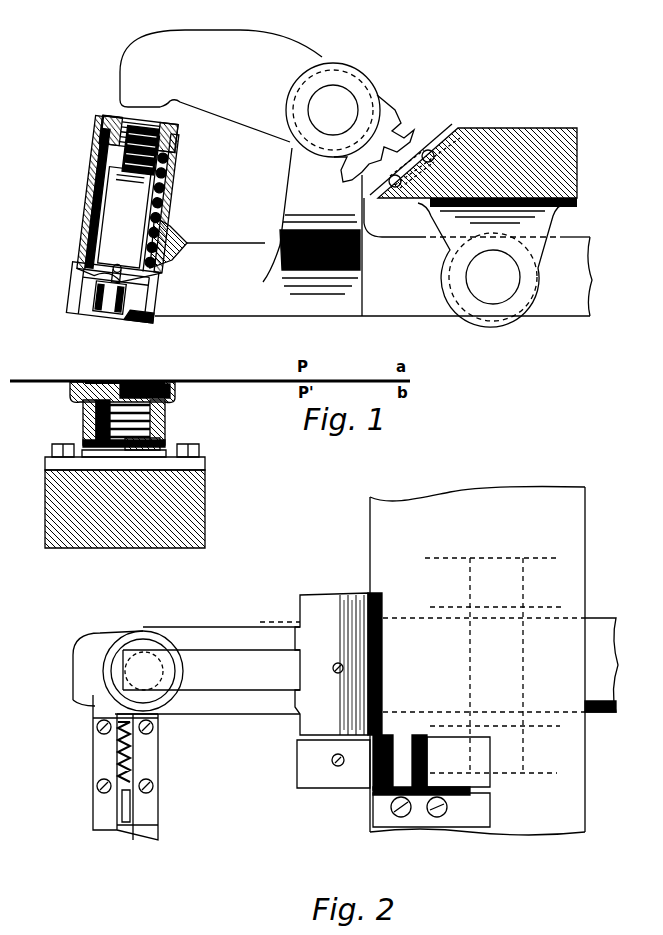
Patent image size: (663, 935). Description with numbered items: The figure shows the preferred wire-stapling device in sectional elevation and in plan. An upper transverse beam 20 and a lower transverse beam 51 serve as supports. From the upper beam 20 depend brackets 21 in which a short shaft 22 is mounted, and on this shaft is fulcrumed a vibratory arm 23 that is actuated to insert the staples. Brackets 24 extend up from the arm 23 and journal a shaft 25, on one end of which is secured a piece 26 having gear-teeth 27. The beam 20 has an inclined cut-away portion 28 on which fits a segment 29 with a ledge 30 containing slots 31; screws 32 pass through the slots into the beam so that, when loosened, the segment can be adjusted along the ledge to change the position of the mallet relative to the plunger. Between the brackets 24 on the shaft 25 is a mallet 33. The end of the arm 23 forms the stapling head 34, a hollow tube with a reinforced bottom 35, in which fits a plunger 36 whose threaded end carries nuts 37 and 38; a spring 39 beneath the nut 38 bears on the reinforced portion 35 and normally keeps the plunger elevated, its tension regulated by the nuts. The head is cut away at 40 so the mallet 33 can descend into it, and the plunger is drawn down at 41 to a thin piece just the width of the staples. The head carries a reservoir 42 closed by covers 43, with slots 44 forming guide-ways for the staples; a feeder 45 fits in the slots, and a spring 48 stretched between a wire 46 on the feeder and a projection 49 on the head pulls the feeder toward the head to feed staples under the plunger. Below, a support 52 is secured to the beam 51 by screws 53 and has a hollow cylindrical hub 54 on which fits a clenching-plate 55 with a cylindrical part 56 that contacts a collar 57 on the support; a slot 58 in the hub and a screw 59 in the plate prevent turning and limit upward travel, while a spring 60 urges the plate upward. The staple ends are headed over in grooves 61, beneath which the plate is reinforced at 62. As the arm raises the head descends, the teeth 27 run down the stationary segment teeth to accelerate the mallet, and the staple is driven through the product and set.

In FIG. 1, the upper transverse beam 20 is at (540, 131).
In FIG. 2, the upper transverse beam 20 is at (476, 661).
In FIG. 1, the depending arms or brackets 21 is at (512, 218).
In FIG. 2, the depending arms or brackets 21 is at (495, 665).
In FIG. 1, the short shaft 22 is at (493, 277).
In FIG. 2, the short shaft 22 is at (484, 665).
In FIG. 1, the vibratory lever or arm 23 is at (373, 276).
In FIG. 2, the vibratory lever or arm 23 is at (366, 666).
In FIG. 1, the brackets or arms 24 is at (312, 232).
In FIG. 2, the brackets or arms 24 is at (314, 603).
In FIG. 1, the shaft 25 is at (333, 110).
In FIG. 2, the shaft 25 is at (338, 594).
In FIG. 1, the toothed piece 26 is at (378, 98).
In FIG. 2, the toothed piece 26 is at (300, 775).
In FIG. 1, the gear-teeth 27 is at (404, 120).
In FIG. 2, the gear-teeth 27 is at (405, 745).
In FIG. 1, the inclined cut-away portion 28 is at (480, 140).
In FIG. 1, the segment 29 is at (378, 184).
In FIG. 2, the segment 29 is at (458, 762).
In FIG. 1, the ledge or shoulder 30 is at (392, 205).
In FIG. 2, the ledge or shoulder 30 is at (492, 803).
In FIG. 1, the slots 31 is at (464, 133).
In FIG. 2, the slots 31 is at (385, 808).
In FIG. 2, the screws 32 is at (431, 833).
In FIG. 1, the mallet or striking piece 33 is at (221, 86).
In FIG. 2, the mallet or striking piece 33 is at (211, 670).
In FIG. 1, the stapling head 34 is at (77, 218).
In FIG. 2, the stapling head 34 is at (333, 668).
In FIG. 1, the reinforced bottom 35 is at (80, 270).
In FIG. 1, the striking head or plunger 36 is at (162, 165).
In FIG. 2, the striking head or plunger 36 is at (163, 671).
In FIG. 1, the nut 37 is at (160, 130).
In FIG. 2, the nut 37 is at (143, 671).
In FIG. 1, the nut 38 is at (84, 130).
In FIG. 1, the spring 39 is at (162, 207).
In FIG. 1, the cut-away portion 40 is at (162, 187).
In FIG. 1, the drawn-down portion 41 is at (125, 217).
In FIG. 1, the reservoir 42 is at (145, 302).
In FIG. 2, the reservoir 42 is at (93, 778).
In FIG. 1, the covers 43 is at (84, 278).
In FIG. 2, the covers 43 is at (128, 756).
In FIG. 1, the slots 44 is at (109, 297).
In FIG. 2, the feeder 45 is at (130, 807).
In FIG. 2, the wire 46 is at (130, 822).
In FIG. 2, the spring 48 is at (338, 766).
In FIG. 2, the projection 49 is at (95, 718).
In FIG. 1, the lower transverse beam 51 is at (205, 495).
In FIG. 1, the support 52 is at (205, 464).
In FIG. 1, the screws 53 is at (52, 450).
In FIG. 1, the hollow cylindrical hub 54 is at (96, 426).
In FIG. 1, the clenching-plate 55 is at (72, 394).
In FIG. 1, the hollow cylindrical part 56 is at (165, 437).
In FIG. 1, the collar 57 is at (112, 452).
In FIG. 1, the slot 58 is at (165, 424).
In FIG. 1, the screw 59 is at (150, 412).
In FIG. 1, the spring 60 is at (83, 411).
In FIG. 1, the grooves 61 is at (118, 383).
In FIG. 1, the reinforcement 62 is at (175, 388).